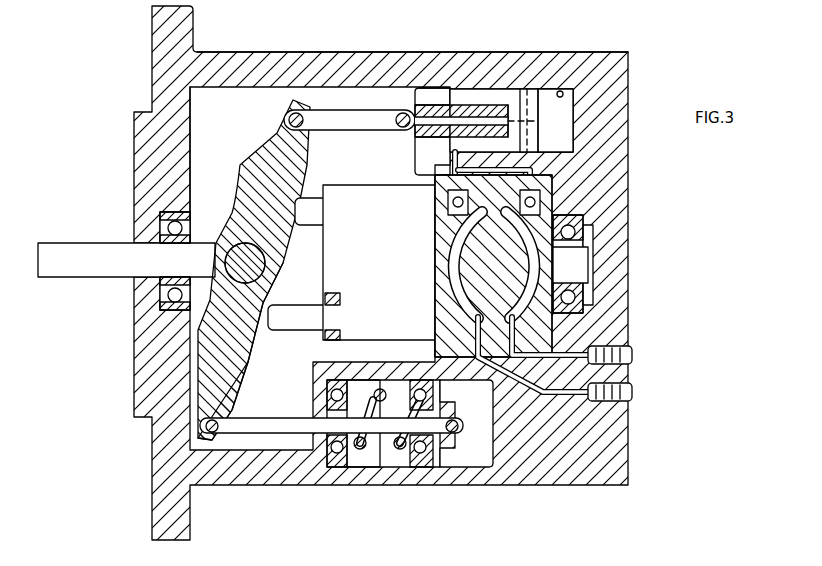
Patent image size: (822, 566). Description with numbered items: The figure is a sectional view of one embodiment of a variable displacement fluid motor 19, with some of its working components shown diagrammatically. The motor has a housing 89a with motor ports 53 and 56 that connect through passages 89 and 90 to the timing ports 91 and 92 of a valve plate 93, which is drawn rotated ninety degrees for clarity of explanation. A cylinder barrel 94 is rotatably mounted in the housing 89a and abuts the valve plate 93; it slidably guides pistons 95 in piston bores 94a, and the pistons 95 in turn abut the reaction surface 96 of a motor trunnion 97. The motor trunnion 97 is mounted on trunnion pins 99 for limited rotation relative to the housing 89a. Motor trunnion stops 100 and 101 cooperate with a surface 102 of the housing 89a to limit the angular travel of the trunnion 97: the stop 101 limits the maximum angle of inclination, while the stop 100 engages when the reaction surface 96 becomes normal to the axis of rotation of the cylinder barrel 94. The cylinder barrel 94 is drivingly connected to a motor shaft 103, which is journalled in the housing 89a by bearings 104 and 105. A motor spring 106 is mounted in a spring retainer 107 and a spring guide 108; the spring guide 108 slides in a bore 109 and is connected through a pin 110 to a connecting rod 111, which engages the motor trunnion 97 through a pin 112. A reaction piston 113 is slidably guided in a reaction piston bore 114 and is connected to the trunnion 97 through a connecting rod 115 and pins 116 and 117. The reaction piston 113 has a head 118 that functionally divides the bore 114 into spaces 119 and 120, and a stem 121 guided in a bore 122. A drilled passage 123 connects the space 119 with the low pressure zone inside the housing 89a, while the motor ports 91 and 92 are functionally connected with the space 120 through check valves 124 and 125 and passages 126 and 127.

The fluid motor 19 is at (343, 36).
The motor port 53 is at (631, 356).
The motor port 56 is at (631, 393).
The passage 89 is at (555, 357).
The housing 89a is at (264, 52).
The passage 90 is at (546, 391).
The timing port 91 is at (459, 250).
The timing port 92 is at (531, 248).
The valve plate 93 is at (507, 271).
The cylinder barrel 94 is at (390, 249).
The piston bore 94a is at (340, 307).
The piston 95 is at (297, 313).
The reaction surface 96 is at (258, 347).
The motor trunnion 97 is at (246, 362).
The trunnion pin 99 is at (264, 265).
The motor trunnion stop 100 is at (246, 168).
The motor trunnion stop 101 is at (197, 346).
The surface 102 is at (188, 131).
The motor shaft 103 is at (104, 243).
The bearing 104 is at (183, 229).
The bearing 105 is at (578, 226).
The motor spring 106 is at (375, 394).
The spring retainer 107 is at (333, 378).
The spring guide 108 is at (412, 392).
The bore 109 is at (452, 384).
The pin 110 is at (458, 425).
The connecting rod 111 is at (284, 422).
The pin 112 is at (221, 424).
The reaction piston 113 is at (486, 98).
The reaction piston bore 114 is at (560, 91).
The connecting rod 115 is at (364, 120).
The pin 116 is at (399, 128).
The pin 117 is at (291, 121).
The head 118 is at (538, 125).
The space 119 is at (566, 110).
The space 120 is at (500, 98).
The stem 121 is at (420, 151).
The bore 122 is at (416, 106).
The drilled passage 123 is at (456, 105).
The check valve 124 is at (447, 203).
The check valve 125 is at (540, 198).
The passage 126 is at (452, 170).
The passage 127 is at (534, 172).